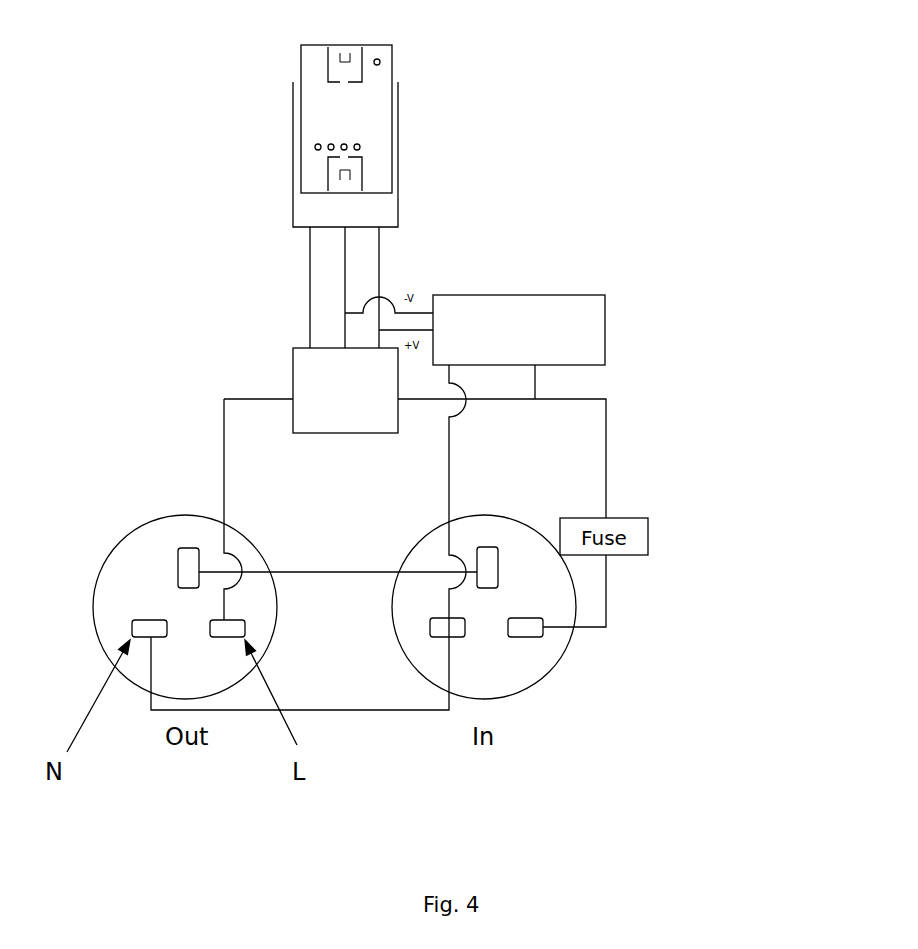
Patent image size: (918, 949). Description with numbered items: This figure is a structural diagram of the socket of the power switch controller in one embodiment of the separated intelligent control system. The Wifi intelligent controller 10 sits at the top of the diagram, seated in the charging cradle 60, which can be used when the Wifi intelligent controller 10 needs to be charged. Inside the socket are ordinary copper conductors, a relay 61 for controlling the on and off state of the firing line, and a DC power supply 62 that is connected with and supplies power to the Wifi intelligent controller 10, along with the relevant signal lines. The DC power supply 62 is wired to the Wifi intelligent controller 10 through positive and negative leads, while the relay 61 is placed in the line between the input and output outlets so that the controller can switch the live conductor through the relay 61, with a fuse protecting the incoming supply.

The Wifi intelligent controller 10 is at (377, 95).
The charging cradle 60 is at (380, 207).
The relay 61 is at (307, 377).
The DC power supply 62 is at (580, 332).